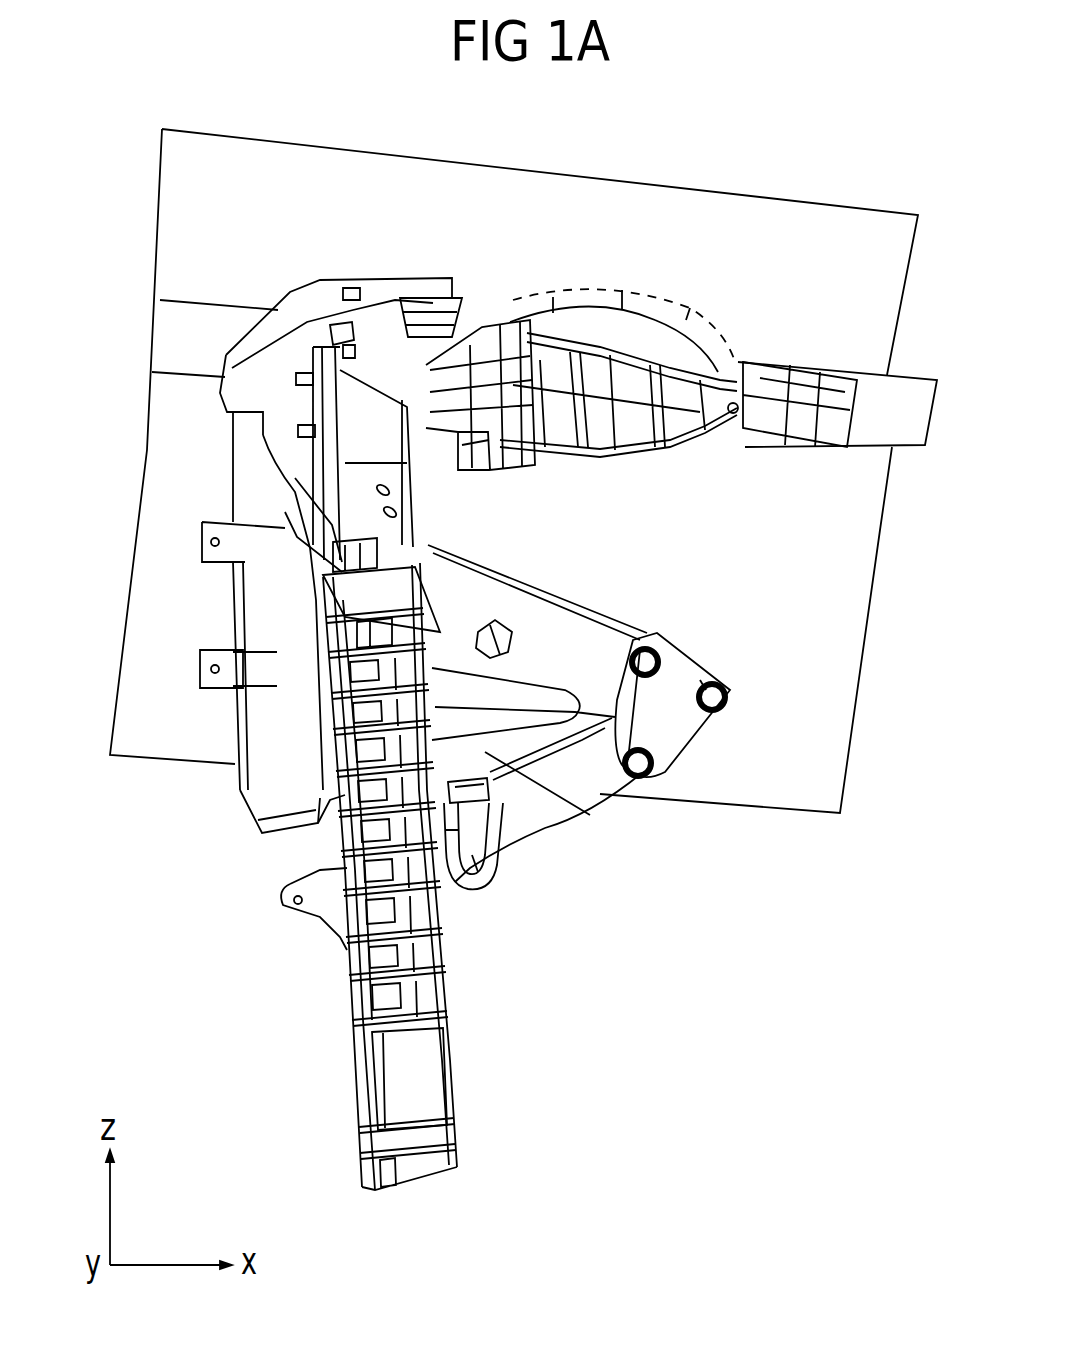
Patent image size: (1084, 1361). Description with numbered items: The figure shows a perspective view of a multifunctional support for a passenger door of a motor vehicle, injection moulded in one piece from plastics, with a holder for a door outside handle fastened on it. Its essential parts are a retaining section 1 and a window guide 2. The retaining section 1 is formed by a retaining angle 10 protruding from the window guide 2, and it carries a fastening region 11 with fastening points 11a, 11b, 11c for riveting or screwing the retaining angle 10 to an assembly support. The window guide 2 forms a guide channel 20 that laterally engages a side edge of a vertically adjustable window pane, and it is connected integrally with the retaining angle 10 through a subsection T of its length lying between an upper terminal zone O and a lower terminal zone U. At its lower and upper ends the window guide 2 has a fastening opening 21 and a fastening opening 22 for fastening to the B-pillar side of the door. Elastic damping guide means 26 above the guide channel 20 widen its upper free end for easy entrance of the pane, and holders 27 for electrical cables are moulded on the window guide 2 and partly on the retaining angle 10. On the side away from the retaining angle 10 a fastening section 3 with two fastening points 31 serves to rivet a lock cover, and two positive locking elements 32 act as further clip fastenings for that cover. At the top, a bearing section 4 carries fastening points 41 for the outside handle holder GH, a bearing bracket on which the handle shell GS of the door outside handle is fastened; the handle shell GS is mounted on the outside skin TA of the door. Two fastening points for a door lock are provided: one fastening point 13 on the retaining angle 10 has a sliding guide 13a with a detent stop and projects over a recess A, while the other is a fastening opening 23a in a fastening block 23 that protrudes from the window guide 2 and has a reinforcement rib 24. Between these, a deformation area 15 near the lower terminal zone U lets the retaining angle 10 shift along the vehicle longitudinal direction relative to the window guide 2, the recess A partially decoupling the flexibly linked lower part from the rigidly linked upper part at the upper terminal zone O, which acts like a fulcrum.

The retaining section 1 is at (557, 830).
The window guide 2 is at (347, 1010).
The fastening section 3 is at (265, 740).
The bearing section 4 is at (453, 273).
The retaining angle 10 is at (592, 775).
The fastening region 11 is at (690, 677).
The fastening point 11a is at (660, 658).
The fastening point 11b is at (728, 696).
The fastening point 11c is at (655, 766).
The fastening point 13 is at (458, 777).
The sliding guide 13a is at (497, 850).
The deformation area 15 is at (483, 897).
The guide channel 20 is at (363, 410).
The fastening opening 21 is at (370, 1165).
The fastening opening 22 is at (296, 535).
The fastening block 23 is at (327, 917).
The fastening opening 23a is at (298, 902).
The reinforcement rib 24 is at (347, 870).
The elastic damping guide means 26 is at (347, 333).
The holders for electrical cables 27 is at (485, 630).
The fastening points 31 is at (213, 670).
The positive locking elements 32 is at (357, 633).
The fastening points 41 is at (493, 332).
The handle shell GS is at (673, 308).
The outside handle holder GH is at (695, 447).
The outside skin of the door TA is at (832, 739).
The upper terminal zone O is at (425, 543).
The subsection T is at (327, 795).
The lower terminal zone U is at (435, 852).
The recess A is at (540, 790).